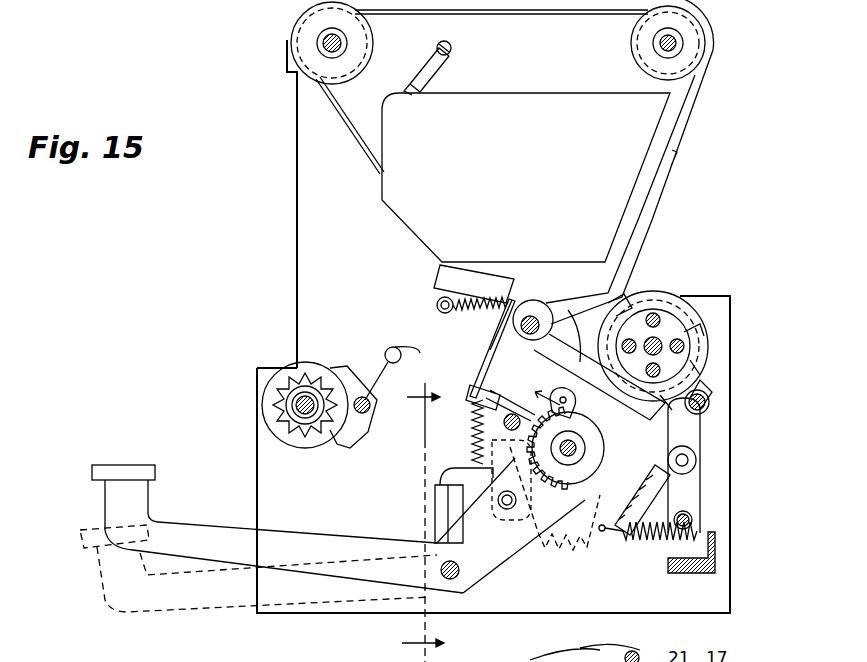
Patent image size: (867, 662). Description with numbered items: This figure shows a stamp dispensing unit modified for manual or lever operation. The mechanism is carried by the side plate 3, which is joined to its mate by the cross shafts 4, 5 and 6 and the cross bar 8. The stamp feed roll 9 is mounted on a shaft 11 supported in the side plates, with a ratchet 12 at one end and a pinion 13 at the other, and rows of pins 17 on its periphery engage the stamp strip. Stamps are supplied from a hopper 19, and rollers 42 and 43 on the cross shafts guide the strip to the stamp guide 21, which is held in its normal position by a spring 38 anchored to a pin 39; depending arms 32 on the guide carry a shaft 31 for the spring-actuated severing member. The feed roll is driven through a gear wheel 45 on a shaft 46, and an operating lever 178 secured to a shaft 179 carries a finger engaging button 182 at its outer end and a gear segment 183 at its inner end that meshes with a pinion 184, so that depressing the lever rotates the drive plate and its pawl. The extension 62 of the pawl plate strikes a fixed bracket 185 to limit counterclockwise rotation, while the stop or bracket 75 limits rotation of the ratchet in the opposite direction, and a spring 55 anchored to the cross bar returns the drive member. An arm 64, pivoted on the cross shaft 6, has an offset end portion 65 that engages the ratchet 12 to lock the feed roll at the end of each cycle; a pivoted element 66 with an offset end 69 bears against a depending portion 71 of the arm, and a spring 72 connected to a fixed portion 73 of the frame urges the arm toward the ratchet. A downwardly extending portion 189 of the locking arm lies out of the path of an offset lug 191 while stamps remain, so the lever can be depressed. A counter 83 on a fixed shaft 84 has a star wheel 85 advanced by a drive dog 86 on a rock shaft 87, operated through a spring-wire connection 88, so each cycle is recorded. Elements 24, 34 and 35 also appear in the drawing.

The side plate 3 is at (297, 213).
The cross shaft 4 is at (343, 43).
The cross shaft 5 is at (655, 45).
The cross shaft 6 is at (532, 316).
The cross bar 8 is at (715, 570).
The stamp feed roll 9 is at (720, 349).
The shaft 11 is at (658, 343).
The ratchet 12 is at (642, 305).
The pinion 13 is at (690, 362).
The row of pins 17 is at (426, 510).
The hopper 19 is at (555, 103).
The stamp guide 21 is at (665, 122).
The pin 24 is at (705, 407).
The shaft 31 is at (690, 460).
The depending arms 32 is at (685, 440).
The bar 34 is at (690, 500).
The pin 35 is at (692, 521).
The spring 38 is at (452, 74).
The pin 39 is at (450, 46).
The roller 42 is at (287, 40).
The roller 43 is at (705, 40).
The gear wheel 45 is at (655, 490).
The shaft 46 is at (580, 458).
The spring 55 is at (650, 542).
The extension 62 is at (440, 476).
The arm 64 is at (578, 330).
The offset end portion 65 is at (665, 400).
The element 66 is at (474, 443).
The end 69 is at (496, 390).
The depending portion 71 is at (500, 355).
The spring 72 is at (481, 300).
The fixed portion 73 is at (437, 304).
The stop 75 is at (482, 352).
The stamp counter 83 is at (290, 368).
The fixed shaft 84 is at (298, 410).
The star wheel 85 is at (285, 400).
The drive dog 86 is at (347, 444).
The rock shaft 87 is at (368, 412).
The connection 88 is at (388, 350).
The operating lever 178 is at (276, 540).
The shaft 179 is at (455, 580).
The finger engaging button 182 is at (100, 465).
The gear segment 183 is at (513, 545).
The pinion 184 is at (566, 500).
The fixed bracket 185 is at (435, 505).
The downwardly extending portion 189 is at (486, 404).
The offset lug 191 is at (504, 422).